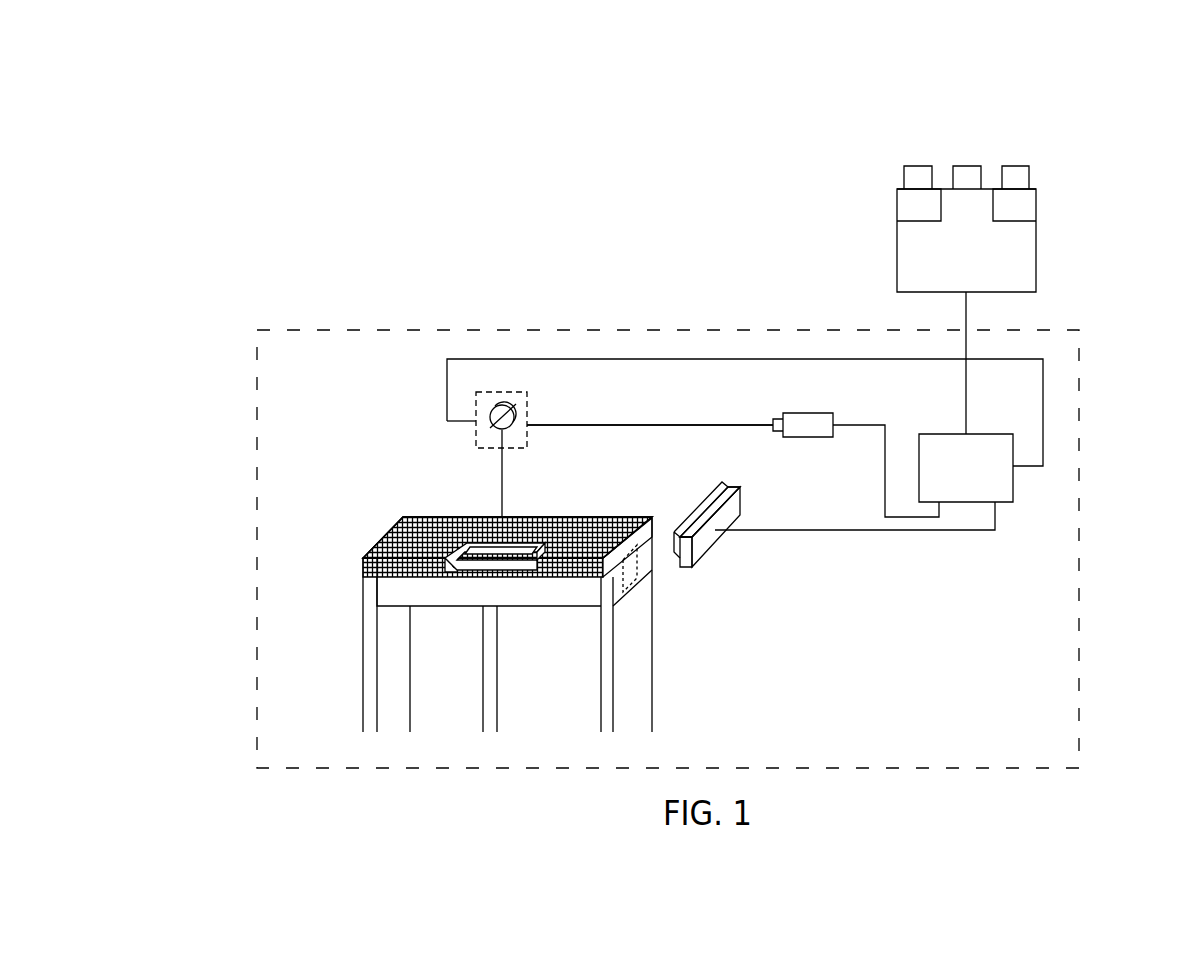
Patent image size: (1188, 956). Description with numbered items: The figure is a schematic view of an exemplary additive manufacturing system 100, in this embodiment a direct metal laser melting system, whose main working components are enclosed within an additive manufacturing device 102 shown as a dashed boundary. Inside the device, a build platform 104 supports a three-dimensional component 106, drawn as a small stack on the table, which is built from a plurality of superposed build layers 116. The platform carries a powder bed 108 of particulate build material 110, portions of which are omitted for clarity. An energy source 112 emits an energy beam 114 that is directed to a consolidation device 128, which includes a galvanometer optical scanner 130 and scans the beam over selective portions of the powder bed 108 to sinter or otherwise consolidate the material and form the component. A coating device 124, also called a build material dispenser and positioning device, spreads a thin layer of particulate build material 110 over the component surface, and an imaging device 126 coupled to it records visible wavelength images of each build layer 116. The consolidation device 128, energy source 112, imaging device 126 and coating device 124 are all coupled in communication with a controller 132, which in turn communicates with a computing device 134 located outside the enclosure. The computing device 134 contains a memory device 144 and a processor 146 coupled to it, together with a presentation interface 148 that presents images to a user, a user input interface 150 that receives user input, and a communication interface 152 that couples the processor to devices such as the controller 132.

The additive manufacturing system 100 is at (1073, 92).
The additive manufacturing device 102 is at (257, 547).
The build platform 104 is at (565, 598).
The three-dimensional component 106 is at (455, 572).
The powder bed 108 is at (393, 518).
The particulate build material 110 is at (380, 538).
The energy source 112 is at (808, 437).
The energy beam 114 is at (683, 425).
The build layers 116 is at (470, 572).
The coating device 124 is at (700, 545).
The imaging device 126 is at (700, 517).
The consolidation device 128 is at (476, 436).
The galvanometer optical scanner 130 is at (515, 403).
The controller 132 is at (990, 434).
The computing device 134 is at (1038, 264).
The memory device 144 is at (1038, 209).
The processor 146 is at (897, 207).
The presentation interface 148 is at (904, 176).
The user input interface 150 is at (966, 166).
The communication interface 152 is at (1030, 176).